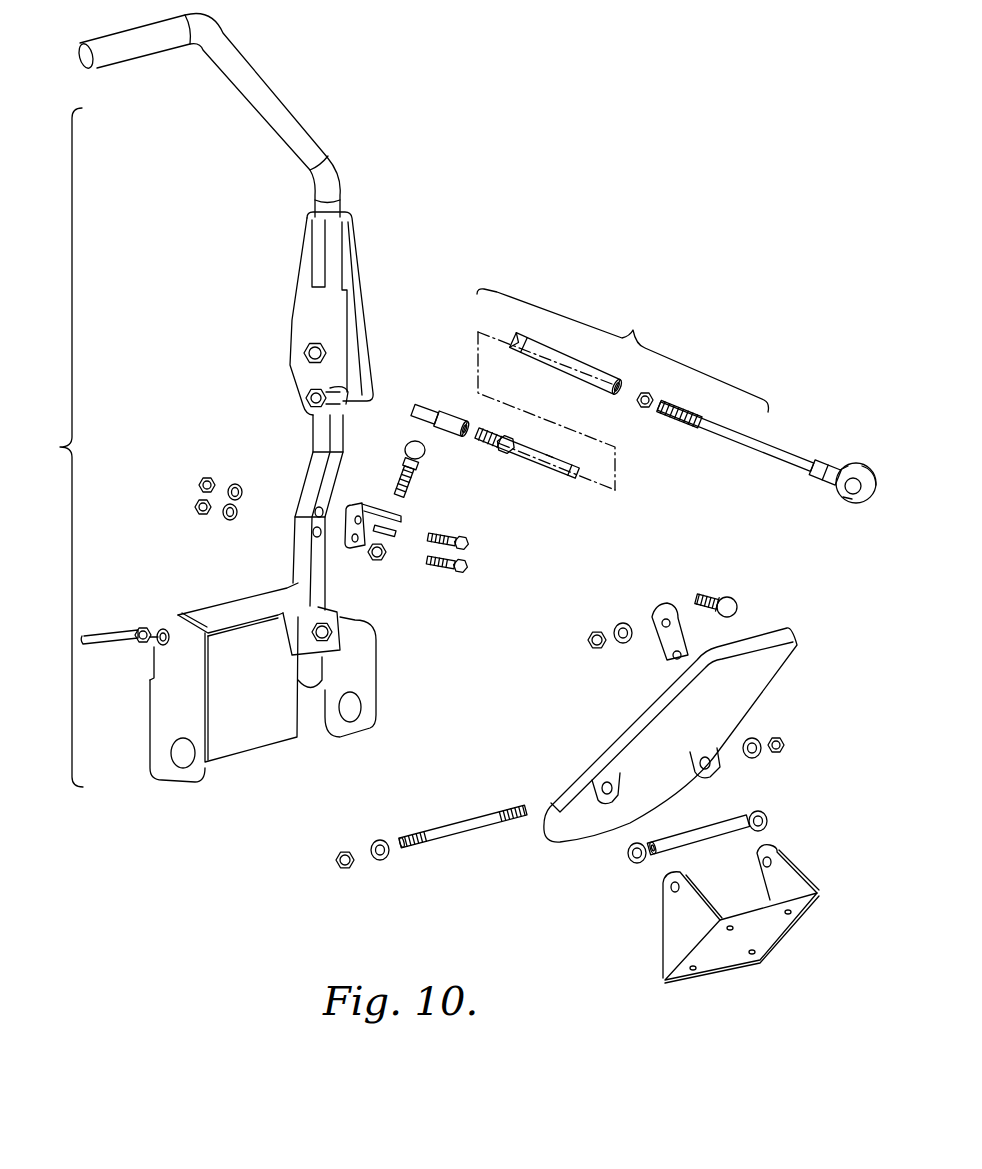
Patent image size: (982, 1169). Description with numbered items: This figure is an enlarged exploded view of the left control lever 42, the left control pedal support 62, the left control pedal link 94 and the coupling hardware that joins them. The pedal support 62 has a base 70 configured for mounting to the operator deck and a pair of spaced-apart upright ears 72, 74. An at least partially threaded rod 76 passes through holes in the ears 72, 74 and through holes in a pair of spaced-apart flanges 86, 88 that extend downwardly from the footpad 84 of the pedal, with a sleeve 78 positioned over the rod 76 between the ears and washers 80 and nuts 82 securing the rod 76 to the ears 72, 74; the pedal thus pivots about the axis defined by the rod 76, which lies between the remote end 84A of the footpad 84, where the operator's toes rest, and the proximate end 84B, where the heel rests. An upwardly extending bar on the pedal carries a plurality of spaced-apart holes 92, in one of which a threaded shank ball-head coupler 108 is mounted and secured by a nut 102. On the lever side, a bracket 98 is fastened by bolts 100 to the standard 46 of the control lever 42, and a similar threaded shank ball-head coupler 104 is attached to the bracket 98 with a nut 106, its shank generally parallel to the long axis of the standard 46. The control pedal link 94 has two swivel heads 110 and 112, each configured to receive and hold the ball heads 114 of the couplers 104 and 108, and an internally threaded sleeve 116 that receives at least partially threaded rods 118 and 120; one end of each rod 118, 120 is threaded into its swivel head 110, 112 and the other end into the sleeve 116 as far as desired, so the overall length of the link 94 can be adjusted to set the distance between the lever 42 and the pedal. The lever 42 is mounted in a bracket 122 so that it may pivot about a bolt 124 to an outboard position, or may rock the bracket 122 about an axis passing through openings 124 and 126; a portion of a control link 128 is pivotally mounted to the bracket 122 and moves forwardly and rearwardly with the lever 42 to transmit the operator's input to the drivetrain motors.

The left drive wheel control lever 42 is at (333, 163).
The standard 46 is at (318, 437).
The left control pedal support 62 is at (723, 921).
The base 70 is at (730, 957).
The upright ear 72 is at (787, 870).
The upright ear 74 is at (673, 913).
The at least partially threaded rod 76 is at (463, 830).
The sleeve 78 is at (707, 840).
The washer 80 is at (398, 535).
The nut 82 is at (645, 410).
The footpad 84 is at (685, 738).
The remote end 84A is at (748, 645).
The proximate end 84B is at (565, 833).
The flange 86 is at (710, 745).
The flange 88 is at (613, 783).
The holes 92 is at (678, 652).
The left control pedal link 94 is at (623, 389).
The bracket 98 is at (352, 552).
The bolt 100 is at (470, 538).
The nut 102 is at (592, 650).
The threaded shank ball-head coupler 104 is at (418, 466).
The nut 106 is at (388, 557).
The threaded shank ball-head coupler 108 is at (723, 595).
The swivel head 110 is at (833, 460).
The swivel head 112 is at (433, 405).
The ball head 114 is at (406, 445).
The internally threaded sleeve 116 is at (588, 392).
The at least partially threaded rod 118 is at (722, 433).
The at least partially threaded rod 120 is at (548, 465).
The bracket 122 is at (230, 742).
The bolt 124 is at (333, 623).
The opening 126 is at (350, 717).
The control link 128 is at (95, 633).